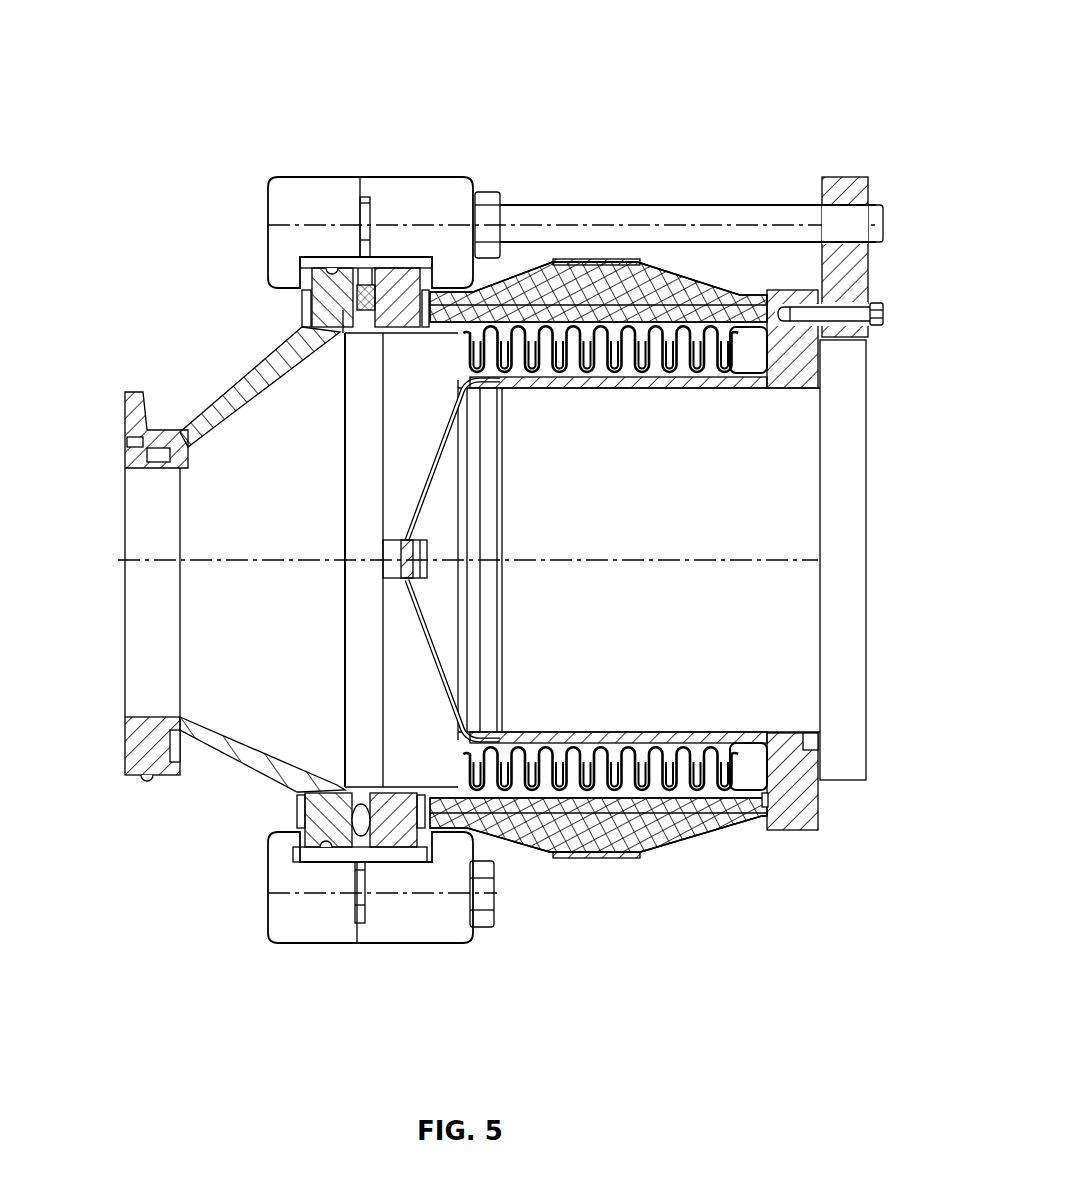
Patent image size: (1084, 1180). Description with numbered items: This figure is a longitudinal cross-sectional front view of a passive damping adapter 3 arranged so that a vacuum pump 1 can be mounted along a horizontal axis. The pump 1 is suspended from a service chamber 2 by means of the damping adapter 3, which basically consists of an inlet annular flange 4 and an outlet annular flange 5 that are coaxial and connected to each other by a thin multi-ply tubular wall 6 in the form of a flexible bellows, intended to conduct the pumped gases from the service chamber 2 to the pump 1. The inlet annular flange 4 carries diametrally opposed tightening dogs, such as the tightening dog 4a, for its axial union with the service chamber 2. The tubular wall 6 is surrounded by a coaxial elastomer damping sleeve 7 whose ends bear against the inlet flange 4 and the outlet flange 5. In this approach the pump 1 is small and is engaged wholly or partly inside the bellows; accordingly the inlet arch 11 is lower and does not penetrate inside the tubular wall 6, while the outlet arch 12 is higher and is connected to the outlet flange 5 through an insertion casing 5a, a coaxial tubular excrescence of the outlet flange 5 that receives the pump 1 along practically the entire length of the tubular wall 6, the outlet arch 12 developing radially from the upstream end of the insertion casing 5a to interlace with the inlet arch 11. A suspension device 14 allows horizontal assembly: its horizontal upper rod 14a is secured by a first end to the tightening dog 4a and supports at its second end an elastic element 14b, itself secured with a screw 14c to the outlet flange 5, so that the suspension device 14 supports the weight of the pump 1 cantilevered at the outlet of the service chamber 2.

The vacuum pump 1 is at (748, 620).
The service chamber 2 is at (227, 390).
The damping adapter 3 is at (665, 858).
The inlet annular flange 4 is at (398, 282).
The tightening dog 4a is at (415, 205).
The outlet annular flange 5 is at (795, 805).
The insertion casing 5a is at (650, 392).
The tubular wall 6 is at (553, 860).
The damping sleeve 7 is at (618, 852).
The inlet arch 11 is at (383, 568).
The outlet arch 12 is at (422, 483).
The suspension device 14 is at (569, 180).
The horizontal upper rod 14a is at (685, 210).
The elastic element 14b is at (838, 178).
The screw 14c is at (885, 325).